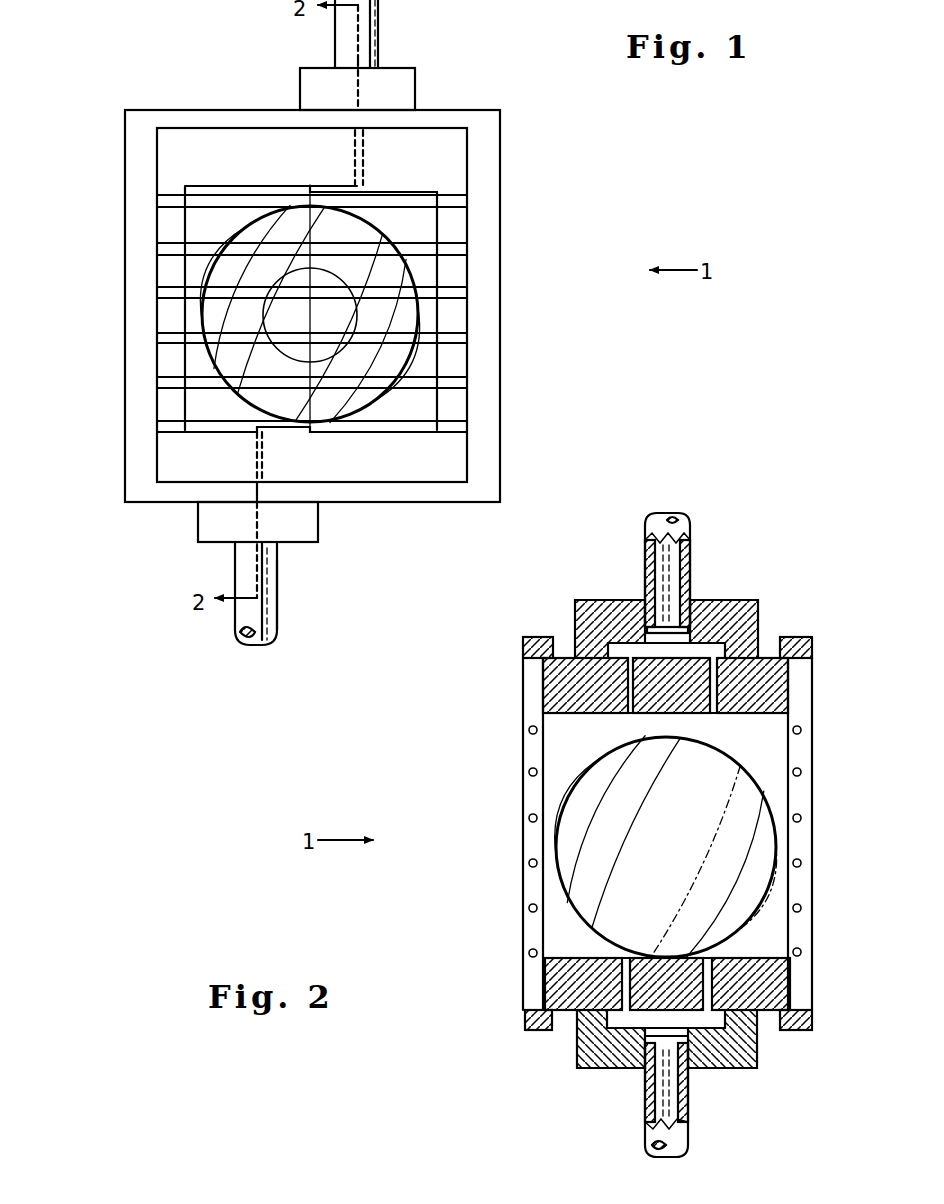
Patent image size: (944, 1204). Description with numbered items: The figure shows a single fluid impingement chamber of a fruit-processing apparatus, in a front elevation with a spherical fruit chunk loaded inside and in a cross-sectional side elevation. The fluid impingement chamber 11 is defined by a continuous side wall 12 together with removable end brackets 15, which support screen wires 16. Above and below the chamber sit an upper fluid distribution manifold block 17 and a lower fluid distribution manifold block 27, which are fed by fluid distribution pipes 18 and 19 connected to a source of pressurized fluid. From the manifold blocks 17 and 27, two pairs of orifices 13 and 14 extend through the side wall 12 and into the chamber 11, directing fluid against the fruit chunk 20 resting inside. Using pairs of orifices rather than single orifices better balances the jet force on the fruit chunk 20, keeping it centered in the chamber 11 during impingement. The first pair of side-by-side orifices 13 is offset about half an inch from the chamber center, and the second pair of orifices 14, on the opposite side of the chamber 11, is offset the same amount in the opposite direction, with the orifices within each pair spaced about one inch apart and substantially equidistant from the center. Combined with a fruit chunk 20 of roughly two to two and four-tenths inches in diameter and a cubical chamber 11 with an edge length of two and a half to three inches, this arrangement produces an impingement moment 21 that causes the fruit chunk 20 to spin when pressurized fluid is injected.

In FIG. 1, the fluid impingement chamber 11 is at (417, 402).
In FIG. 2, the fluid impingement chamber 11 is at (560, 745).
In FIG. 1, the continuous side wall 12 is at (167, 225).
In FIG. 2, the continuous side wall 12 is at (785, 707).
In FIG. 1, the first pair of orifices 13 is at (362, 180).
In FIG. 2, the first pair of orifices 13 is at (628, 683).
In FIG. 1, the second pair of orifices 14 is at (253, 458).
In FIG. 2, the second pair of orifices 14 is at (627, 987).
In FIG. 1, the removable end brackets 15 is at (482, 155).
In FIG. 2, the removable end brackets 15 is at (800, 843).
In FIG. 1, the screen wires 16 is at (457, 250).
In FIG. 2, the screen wires 16 is at (793, 772).
In FIG. 1, the upper fluid distribution manifold block 17 is at (400, 82).
In FIG. 2, the upper fluid distribution manifold block 17 is at (758, 618).
In FIG. 1, the fluid distribution pipe 18 is at (378, 38).
In FIG. 2, the fluid distribution pipe 18 is at (690, 565).
In FIG. 1, the fluid distribution pipe 19 is at (275, 562).
In FIG. 2, the fluid distribution pipe 19 is at (645, 1105).
In FIG. 1, the fruit chunk 20 is at (195, 317).
In FIG. 2, the fruit chunk 20 is at (562, 807).
In FIG. 1, the impingement moment 21 is at (352, 292).
In FIG. 1, the lower fluid distribution manifold block 27 is at (307, 527).
In FIG. 2, the lower fluid distribution manifold block 27 is at (577, 1055).